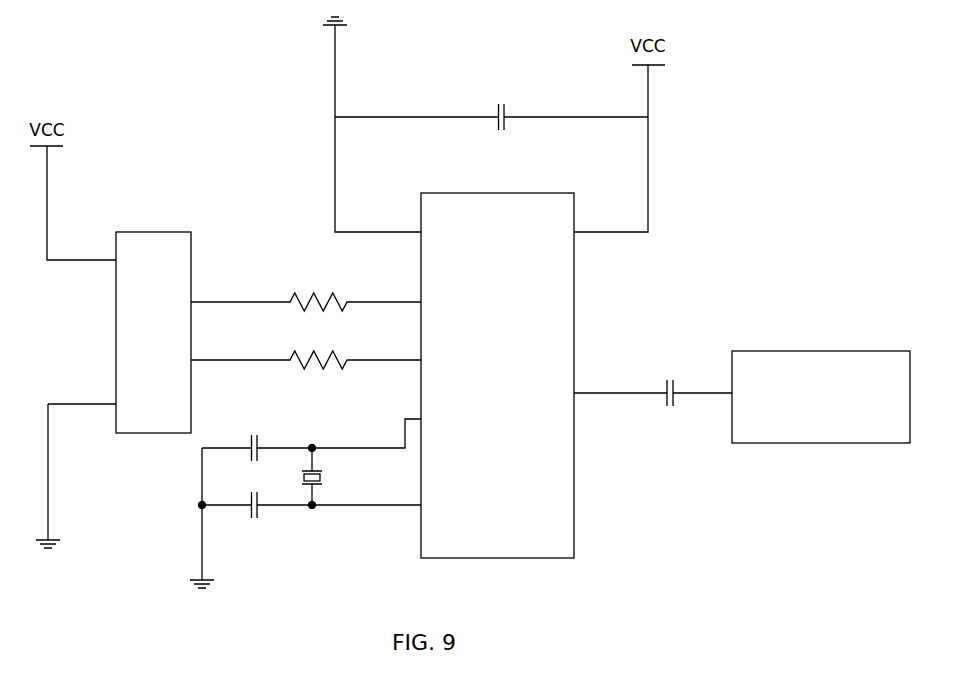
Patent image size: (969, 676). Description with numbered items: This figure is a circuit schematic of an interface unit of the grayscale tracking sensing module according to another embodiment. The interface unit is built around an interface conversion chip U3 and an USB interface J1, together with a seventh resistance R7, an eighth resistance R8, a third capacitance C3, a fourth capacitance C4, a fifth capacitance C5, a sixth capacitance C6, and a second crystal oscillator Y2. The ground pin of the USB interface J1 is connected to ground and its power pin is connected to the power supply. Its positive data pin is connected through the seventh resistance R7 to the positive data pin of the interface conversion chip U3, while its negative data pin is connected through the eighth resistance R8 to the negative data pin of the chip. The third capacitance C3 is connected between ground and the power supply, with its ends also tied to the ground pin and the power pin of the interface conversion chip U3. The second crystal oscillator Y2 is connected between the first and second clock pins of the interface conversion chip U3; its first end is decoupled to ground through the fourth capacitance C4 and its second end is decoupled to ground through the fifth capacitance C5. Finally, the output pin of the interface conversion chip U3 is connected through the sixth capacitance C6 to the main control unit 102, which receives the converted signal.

The main control unit 102 is at (806, 351).
The interface conversion chip U3 is at (497, 366).
The USB interface J1 is at (153, 314).
The seventh resistance R7 is at (306, 287).
The eighth resistance R8 is at (306, 376).
The third capacitance C3 is at (491, 105).
The fourth capacitance C4 is at (311, 435).
The fifth capacitance C5 is at (305, 518).
The sixth capacitance C6 is at (653, 372).
The second crystal oscillator Y2 is at (326, 477).